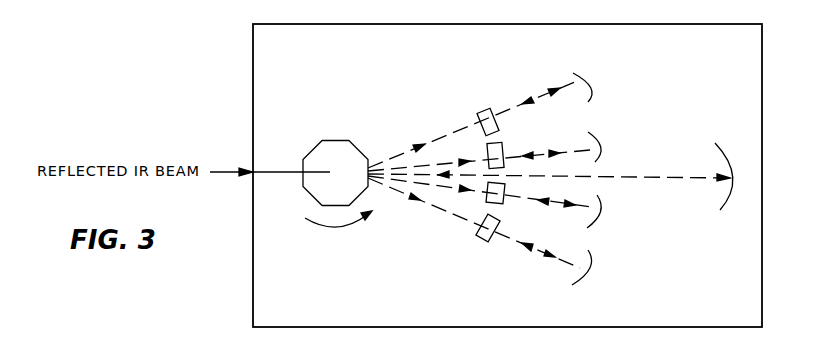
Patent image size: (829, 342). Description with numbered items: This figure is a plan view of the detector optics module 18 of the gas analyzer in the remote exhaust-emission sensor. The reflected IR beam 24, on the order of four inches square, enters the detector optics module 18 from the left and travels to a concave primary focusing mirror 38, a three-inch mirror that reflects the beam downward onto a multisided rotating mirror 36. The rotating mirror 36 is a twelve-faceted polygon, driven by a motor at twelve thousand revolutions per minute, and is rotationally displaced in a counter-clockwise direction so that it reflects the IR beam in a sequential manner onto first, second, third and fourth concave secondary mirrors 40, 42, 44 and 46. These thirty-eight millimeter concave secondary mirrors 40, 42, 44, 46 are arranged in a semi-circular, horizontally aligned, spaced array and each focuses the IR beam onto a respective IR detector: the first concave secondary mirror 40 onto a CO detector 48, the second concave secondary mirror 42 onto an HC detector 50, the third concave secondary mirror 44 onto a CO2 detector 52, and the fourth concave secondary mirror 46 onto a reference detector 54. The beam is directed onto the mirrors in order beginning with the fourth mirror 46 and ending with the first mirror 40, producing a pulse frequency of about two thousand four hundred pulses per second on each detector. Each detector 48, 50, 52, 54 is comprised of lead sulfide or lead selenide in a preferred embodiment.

The detector optics module 18 is at (291, 64).
The reflected IR beam 24 is at (231, 172).
The rotating mirror 36 is at (348, 196).
The primary focusing mirror 38 is at (737, 173).
The first concave secondary mirror 40 is at (579, 77).
The second concave secondary mirror 42 is at (592, 136).
The third concave secondary mirror 44 is at (597, 199).
The fourth concave secondary mirror 46 is at (590, 258).
The CO detector 48 is at (485, 110).
The HC detector 50 is at (500, 143).
The CO2 detector 52 is at (503, 200).
The reference detector 54 is at (487, 240).